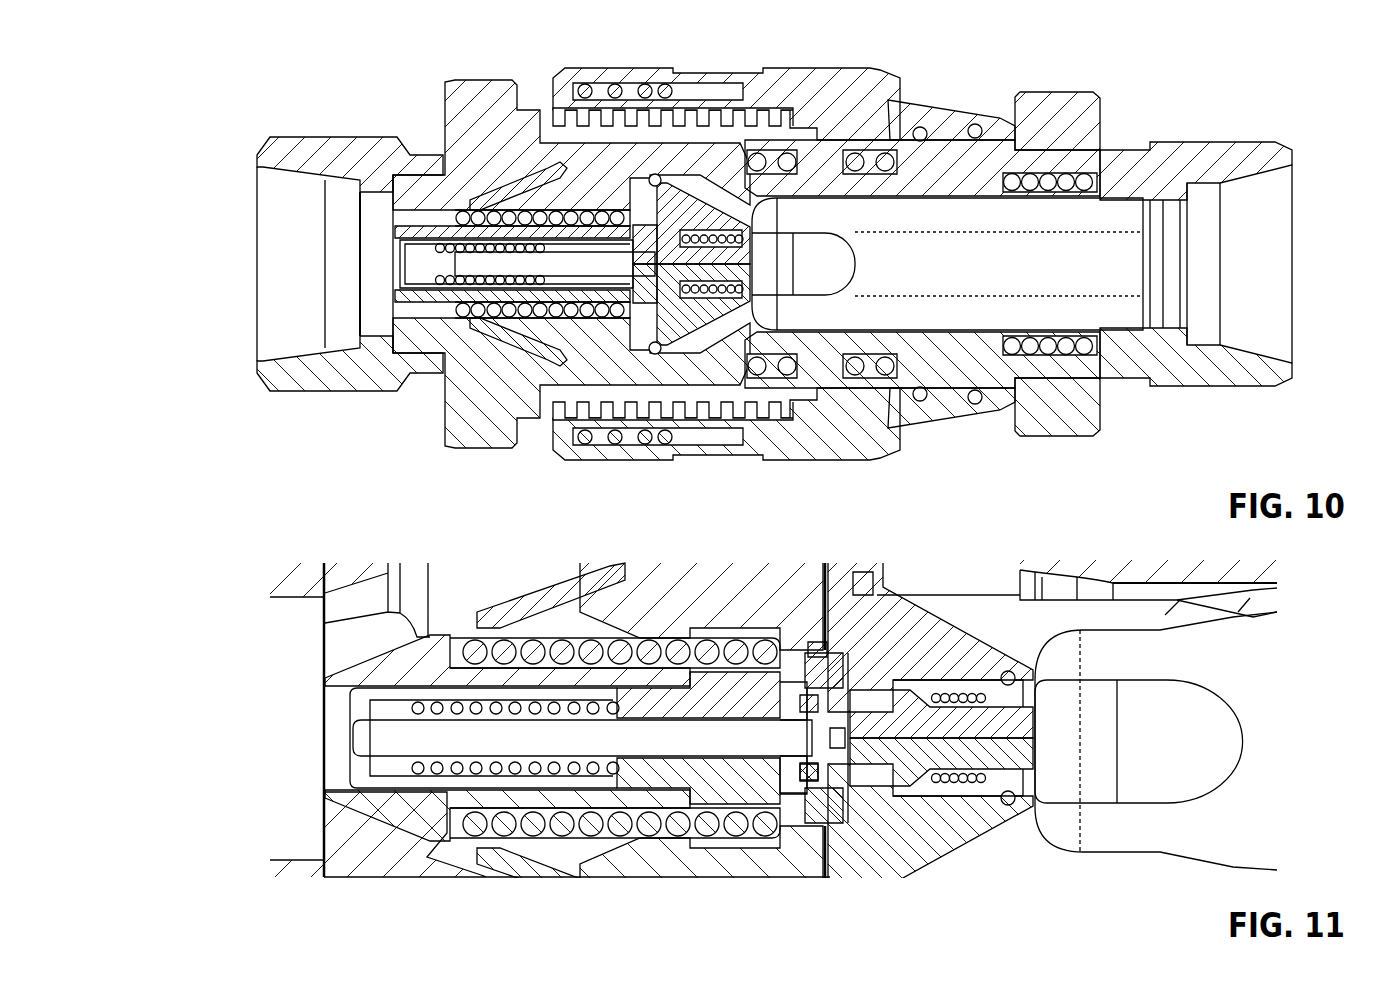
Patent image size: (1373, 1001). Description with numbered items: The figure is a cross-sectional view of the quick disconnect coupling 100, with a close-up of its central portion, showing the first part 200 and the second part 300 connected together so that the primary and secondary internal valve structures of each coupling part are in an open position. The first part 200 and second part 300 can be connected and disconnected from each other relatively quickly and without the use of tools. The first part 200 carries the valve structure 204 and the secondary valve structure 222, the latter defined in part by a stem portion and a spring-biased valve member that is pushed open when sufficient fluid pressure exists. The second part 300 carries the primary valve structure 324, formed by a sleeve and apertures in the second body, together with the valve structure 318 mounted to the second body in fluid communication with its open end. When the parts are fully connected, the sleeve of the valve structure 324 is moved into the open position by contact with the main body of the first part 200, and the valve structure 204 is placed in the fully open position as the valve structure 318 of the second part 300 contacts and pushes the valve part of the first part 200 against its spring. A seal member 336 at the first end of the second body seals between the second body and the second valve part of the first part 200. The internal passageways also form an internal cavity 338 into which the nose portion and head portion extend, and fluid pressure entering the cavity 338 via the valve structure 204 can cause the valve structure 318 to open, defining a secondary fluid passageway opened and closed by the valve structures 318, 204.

In FIG. 10, the quick disconnect coupling 100 is at (279, 79).
In FIG. 11, the quick disconnect coupling 100 is at (338, 533).
In FIG. 10, the first part 200 is at (367, 377).
In FIG. 11, the first part 200 is at (375, 834).
In FIG. 10, the valve structure 204 is at (608, 170).
In FIG. 11, the valve structure 204 is at (716, 585).
In FIG. 10, the valve structure 222 is at (580, 264).
In FIG. 11, the valve structure 222 is at (645, 775).
In FIG. 10, the second part 300 is at (1087, 428).
In FIG. 11, the second part 300 is at (1120, 805).
In FIG. 10, the valve structure 318 is at (700, 264).
In FIG. 11, the valve structure 318 is at (923, 783).
In FIG. 10, the valve structure 324 is at (812, 172).
In FIG. 11, the valve structure 324 is at (1110, 578).
In FIG. 11, the seal member 336 is at (822, 655).
In FIG. 11, the internal cavity 338 is at (803, 787).